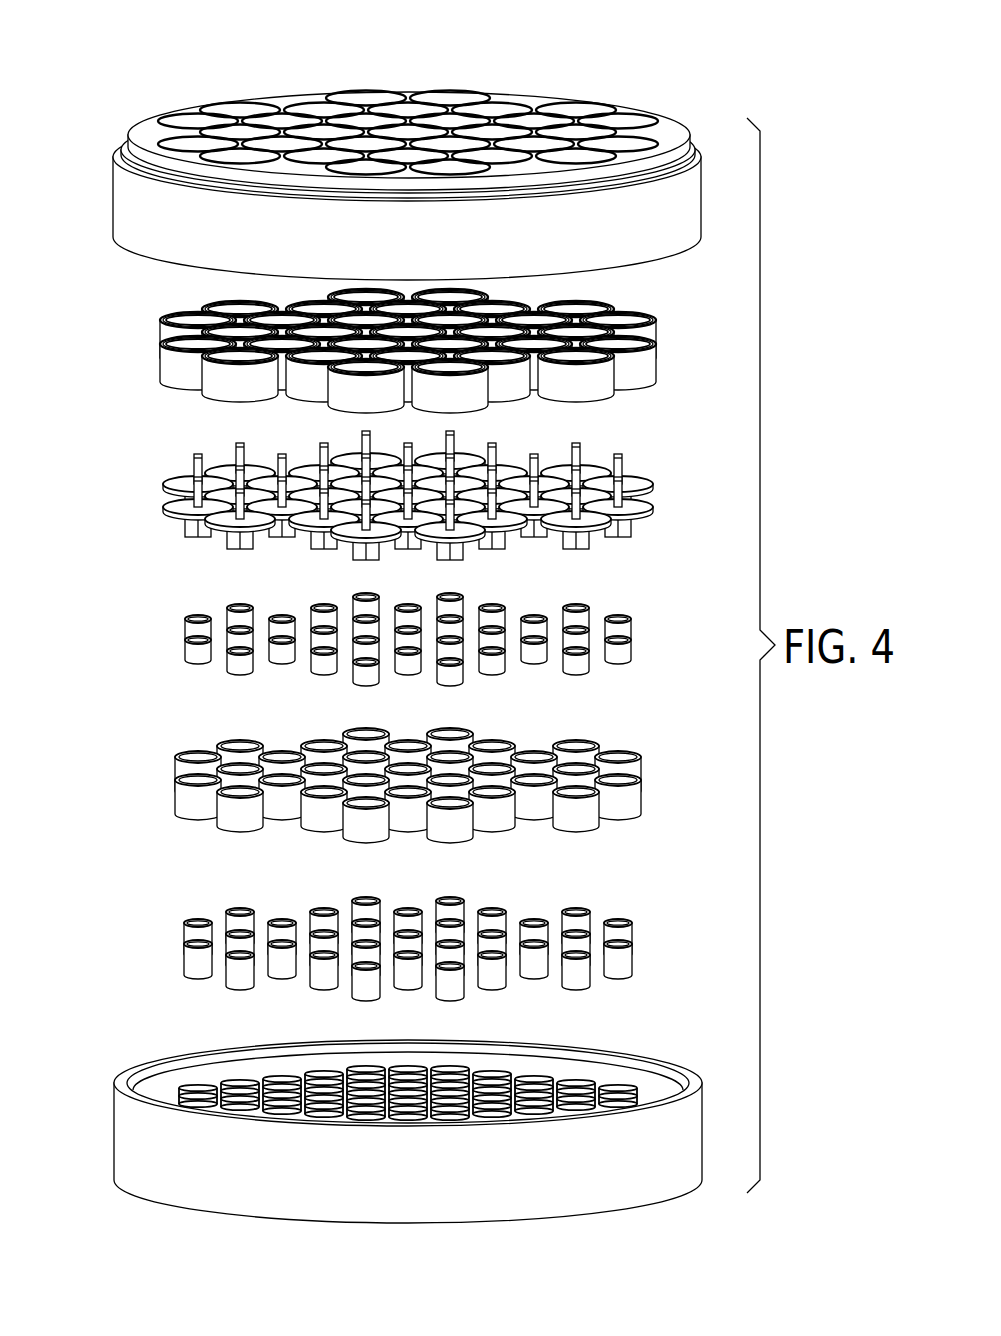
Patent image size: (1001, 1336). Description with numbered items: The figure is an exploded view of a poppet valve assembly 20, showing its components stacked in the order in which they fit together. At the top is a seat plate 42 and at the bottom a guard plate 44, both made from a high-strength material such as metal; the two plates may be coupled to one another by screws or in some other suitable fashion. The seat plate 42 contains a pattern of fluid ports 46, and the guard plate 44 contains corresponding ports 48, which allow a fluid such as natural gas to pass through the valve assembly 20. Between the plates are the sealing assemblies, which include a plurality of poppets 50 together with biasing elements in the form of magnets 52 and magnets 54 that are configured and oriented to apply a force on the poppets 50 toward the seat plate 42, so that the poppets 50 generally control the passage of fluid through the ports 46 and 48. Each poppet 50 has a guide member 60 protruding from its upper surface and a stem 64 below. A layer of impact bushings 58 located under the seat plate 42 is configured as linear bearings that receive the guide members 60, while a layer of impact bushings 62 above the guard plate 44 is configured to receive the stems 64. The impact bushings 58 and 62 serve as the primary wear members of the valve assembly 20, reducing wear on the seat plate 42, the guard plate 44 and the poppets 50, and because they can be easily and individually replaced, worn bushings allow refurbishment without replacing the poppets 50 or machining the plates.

The valve assembly 20 is at (130, 87).
The seat plate 42 is at (683, 204).
The guard plate 44 is at (133, 1137).
The ports 46 is at (357, 110).
The ports 48 is at (228, 1087).
The poppets 50 is at (170, 488).
The magnets 52 is at (183, 619).
The magnets 54 is at (195, 935).
The impact bushings 58 is at (168, 373).
The guide members 60 is at (197, 457).
The impact bushings 62 is at (228, 745).
The stems 64 is at (189, 532).